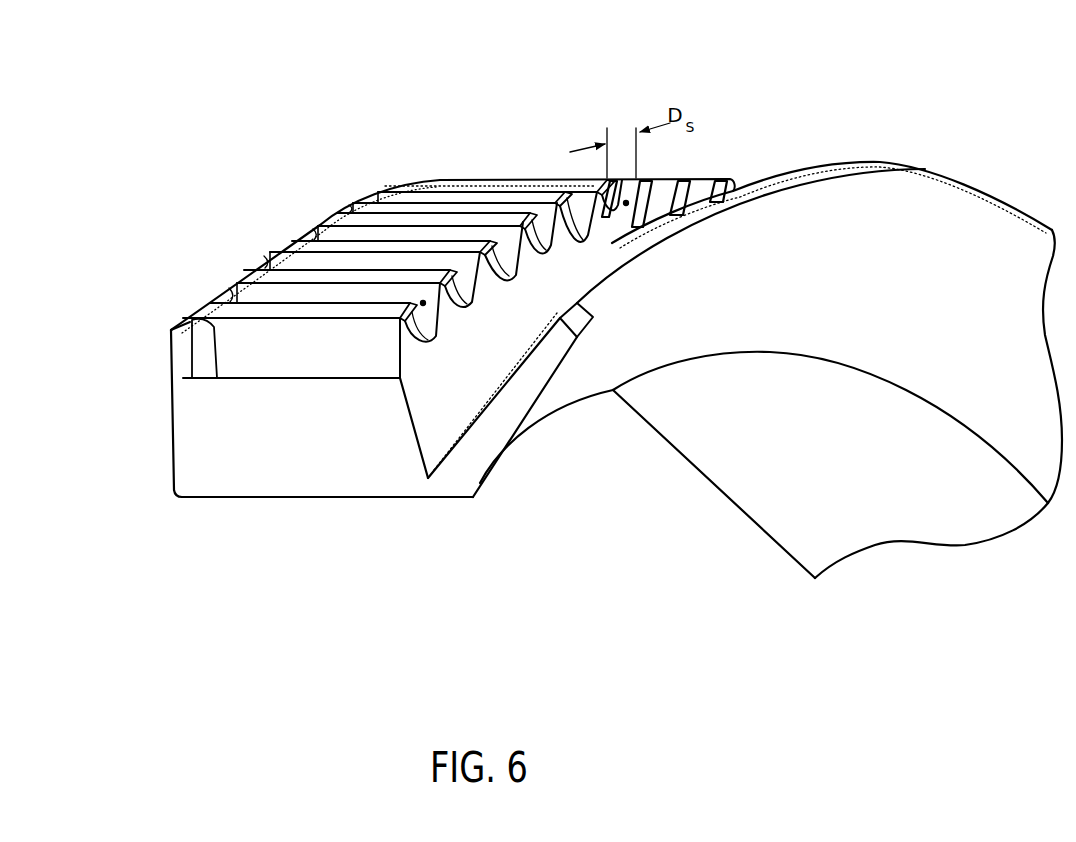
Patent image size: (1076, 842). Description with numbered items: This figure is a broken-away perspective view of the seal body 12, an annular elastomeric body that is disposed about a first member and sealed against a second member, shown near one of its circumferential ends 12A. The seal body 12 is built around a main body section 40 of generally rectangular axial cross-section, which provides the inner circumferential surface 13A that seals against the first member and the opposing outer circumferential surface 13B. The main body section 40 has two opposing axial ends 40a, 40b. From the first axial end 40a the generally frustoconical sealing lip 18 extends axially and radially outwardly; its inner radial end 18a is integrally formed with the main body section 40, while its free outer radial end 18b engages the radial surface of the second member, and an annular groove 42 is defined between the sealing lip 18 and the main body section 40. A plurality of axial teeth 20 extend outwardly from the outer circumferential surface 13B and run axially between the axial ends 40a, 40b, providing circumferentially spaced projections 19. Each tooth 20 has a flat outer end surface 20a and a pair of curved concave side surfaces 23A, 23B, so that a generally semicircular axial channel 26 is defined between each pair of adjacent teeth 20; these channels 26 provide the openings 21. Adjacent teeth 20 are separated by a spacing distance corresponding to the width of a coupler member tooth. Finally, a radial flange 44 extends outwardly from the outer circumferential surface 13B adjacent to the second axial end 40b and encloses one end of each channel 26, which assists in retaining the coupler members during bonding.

The seal body 12 is at (282, 62).
The circumferential end 12A is at (286, 470).
The inner circumferential surface 13A is at (737, 440).
The outer circumferential surface 13B is at (202, 328).
The sealing lip 18 is at (910, 165).
The inner radial end 18a is at (458, 477).
The outer radial end 18b is at (788, 178).
The projections 19 is at (536, 259).
The axial teeth 20 is at (257, 302).
The flat outer end surface 20a is at (313, 243).
The openings 21 is at (624, 230).
The curved concave side surface 23A is at (511, 258).
The curved concave side surface 23B is at (418, 321).
The axial channel 26 is at (425, 304).
The main body section 40 is at (170, 446).
The first axial end 40a is at (428, 425).
The second axial end 40b is at (172, 470).
The annular groove 42 is at (416, 458).
The radial flange 44 is at (186, 316).